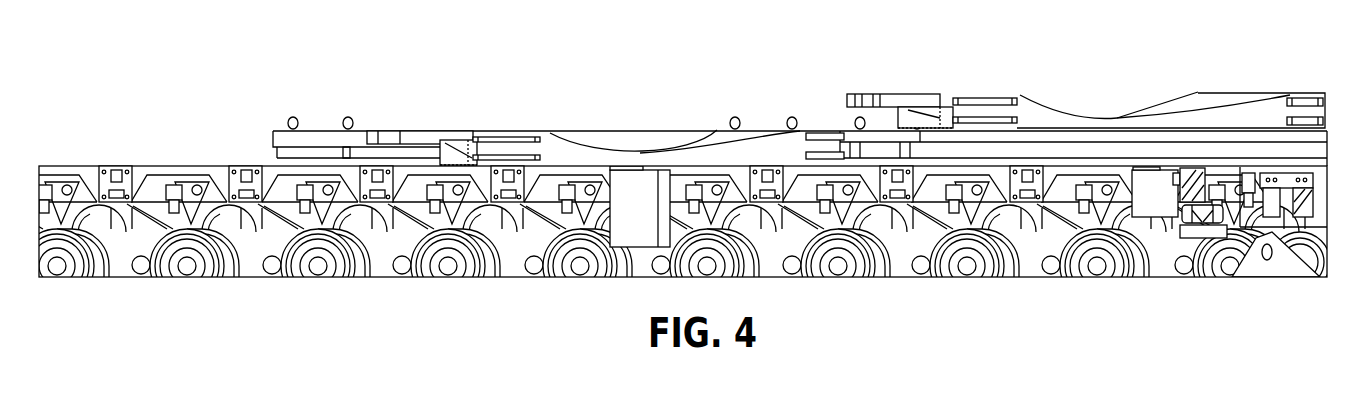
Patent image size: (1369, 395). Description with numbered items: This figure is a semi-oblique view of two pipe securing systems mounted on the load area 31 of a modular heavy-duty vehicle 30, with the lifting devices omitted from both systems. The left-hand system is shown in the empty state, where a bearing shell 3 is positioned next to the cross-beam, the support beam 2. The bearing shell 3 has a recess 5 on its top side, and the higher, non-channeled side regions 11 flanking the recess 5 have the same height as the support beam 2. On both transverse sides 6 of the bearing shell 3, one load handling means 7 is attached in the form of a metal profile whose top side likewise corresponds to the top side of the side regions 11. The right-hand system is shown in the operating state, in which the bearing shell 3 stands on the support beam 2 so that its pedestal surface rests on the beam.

The support beam 2 is at (313, 140).
The bearing shell 3 is at (750, 127).
The recess 5 is at (678, 155).
The transverse sides 6 is at (470, 140).
The load handling means 7 is at (417, 133).
The side regions 11 is at (547, 143).
The modular heavy-duty vehicle 30 is at (98, 170).
The load area 31 is at (143, 164).